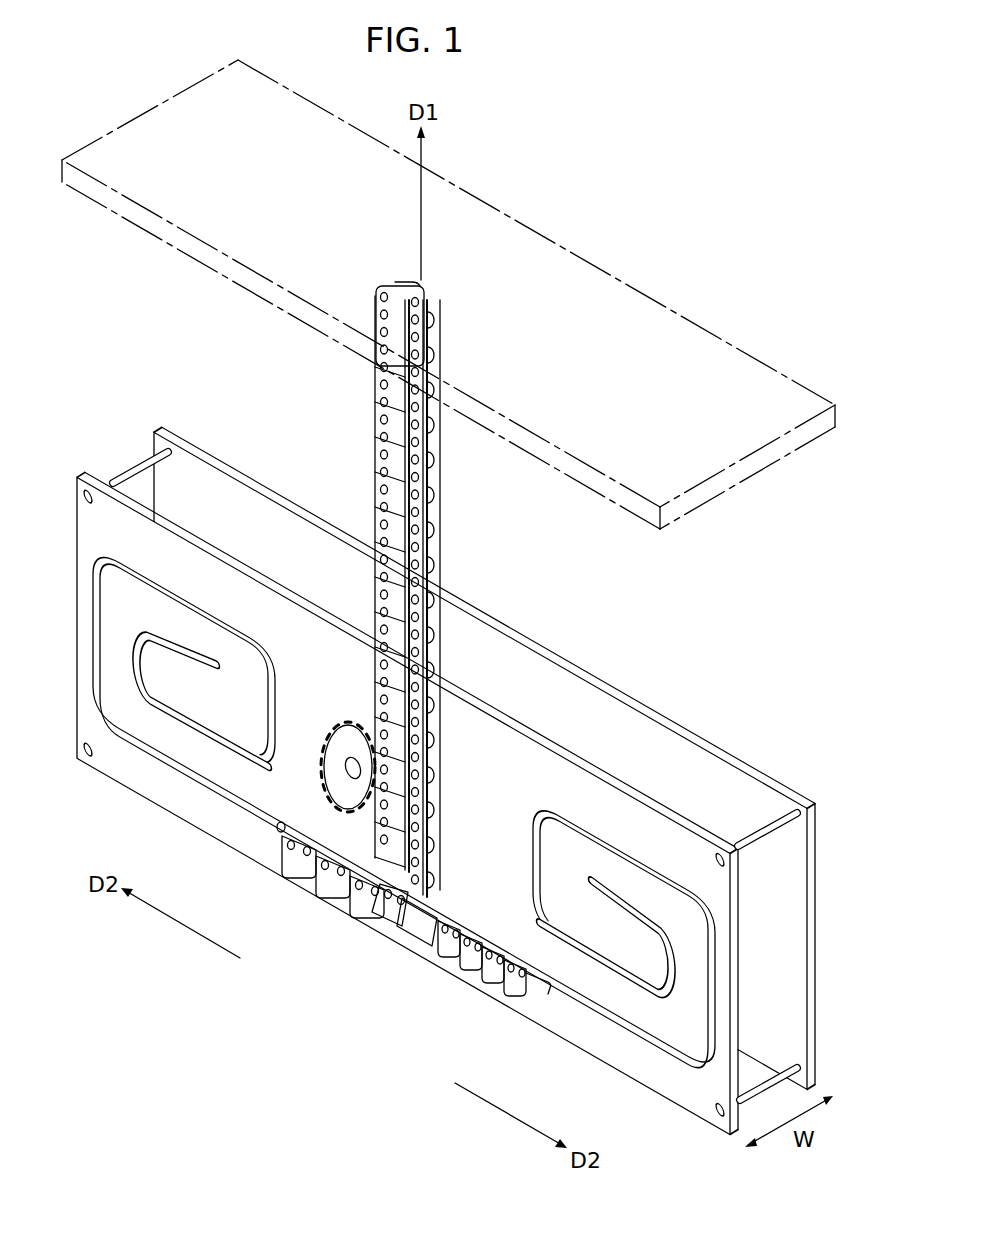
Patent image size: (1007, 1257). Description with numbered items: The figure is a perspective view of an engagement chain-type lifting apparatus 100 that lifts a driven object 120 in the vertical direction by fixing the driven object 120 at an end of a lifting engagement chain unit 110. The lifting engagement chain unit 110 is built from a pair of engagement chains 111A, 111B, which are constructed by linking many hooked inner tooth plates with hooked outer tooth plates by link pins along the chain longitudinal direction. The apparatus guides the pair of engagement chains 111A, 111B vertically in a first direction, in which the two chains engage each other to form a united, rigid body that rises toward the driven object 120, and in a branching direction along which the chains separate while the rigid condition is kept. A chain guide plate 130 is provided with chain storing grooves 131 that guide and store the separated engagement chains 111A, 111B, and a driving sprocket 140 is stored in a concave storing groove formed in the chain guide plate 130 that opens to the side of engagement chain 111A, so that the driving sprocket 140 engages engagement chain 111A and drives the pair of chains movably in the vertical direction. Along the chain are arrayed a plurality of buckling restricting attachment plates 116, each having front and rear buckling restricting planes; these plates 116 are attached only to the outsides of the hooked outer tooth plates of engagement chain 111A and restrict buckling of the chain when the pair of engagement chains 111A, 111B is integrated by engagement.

The engagement chain-type lifting apparatus 100 is at (700, 165).
The lifting engagement chain unit 110 is at (452, 1040).
The engagement chain 111A is at (327, 902).
The engagement chain 111B is at (427, 948).
The buckling restricting attachment plate 116 is at (376, 419).
The driven object 120 is at (748, 378).
The chain guide plate 130 is at (735, 898).
The chain storing groove 131 is at (227, 792).
The driving sprocket 140 is at (347, 750).